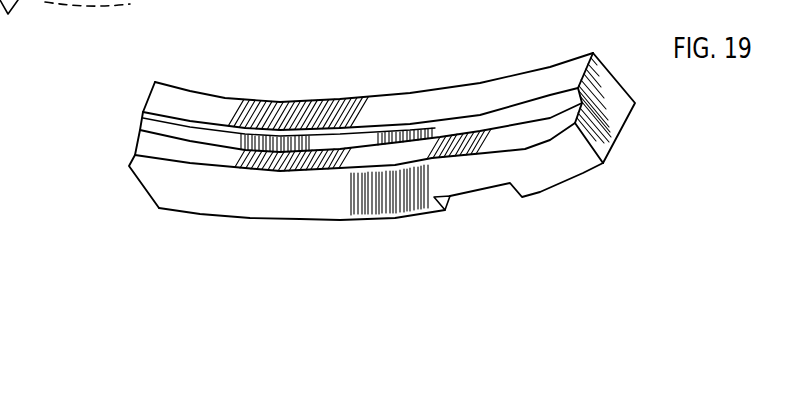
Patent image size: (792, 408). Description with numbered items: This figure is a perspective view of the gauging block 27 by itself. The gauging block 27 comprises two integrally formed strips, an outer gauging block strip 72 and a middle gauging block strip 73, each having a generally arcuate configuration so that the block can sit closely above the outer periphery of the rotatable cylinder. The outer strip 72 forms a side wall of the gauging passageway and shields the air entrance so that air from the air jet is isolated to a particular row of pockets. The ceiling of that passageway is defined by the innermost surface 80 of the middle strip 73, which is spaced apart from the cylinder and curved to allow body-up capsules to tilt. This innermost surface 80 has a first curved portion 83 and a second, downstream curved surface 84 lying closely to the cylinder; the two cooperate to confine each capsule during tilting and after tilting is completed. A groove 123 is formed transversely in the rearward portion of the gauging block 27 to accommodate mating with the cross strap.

The gauging block 27 is at (315, 97).
The gauging block strip 72 is at (575, 70).
The middle gauging block strip 73 is at (174, 145).
The innermost surface 80 is at (548, 131).
The first curved portion 83 is at (514, 145).
The second curved surface 84 is at (257, 163).
The groove 123 is at (462, 198).